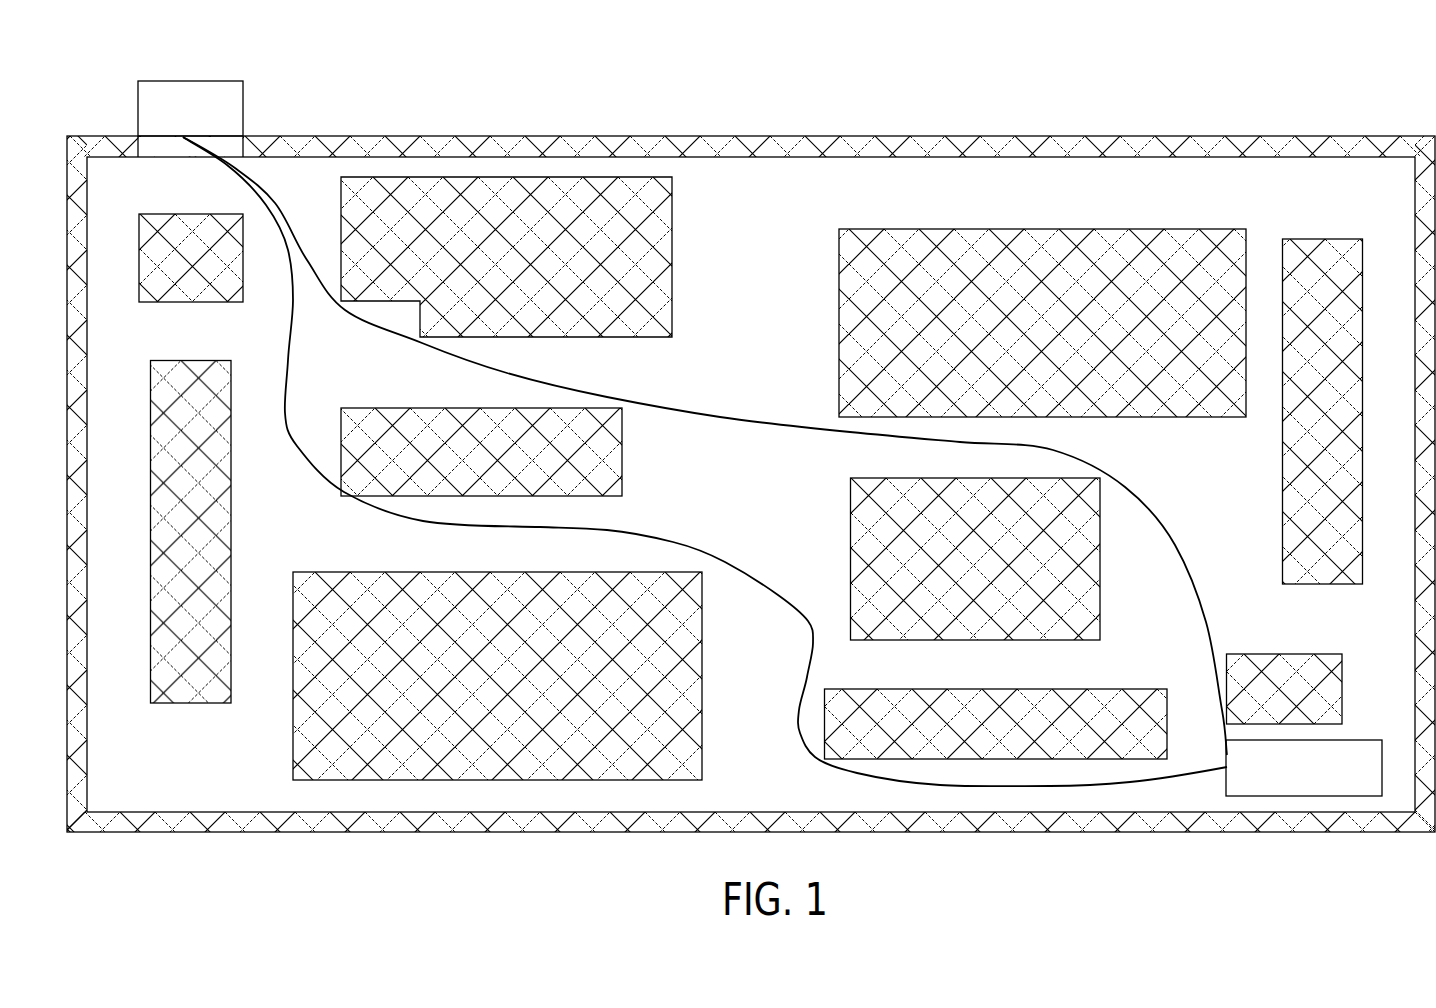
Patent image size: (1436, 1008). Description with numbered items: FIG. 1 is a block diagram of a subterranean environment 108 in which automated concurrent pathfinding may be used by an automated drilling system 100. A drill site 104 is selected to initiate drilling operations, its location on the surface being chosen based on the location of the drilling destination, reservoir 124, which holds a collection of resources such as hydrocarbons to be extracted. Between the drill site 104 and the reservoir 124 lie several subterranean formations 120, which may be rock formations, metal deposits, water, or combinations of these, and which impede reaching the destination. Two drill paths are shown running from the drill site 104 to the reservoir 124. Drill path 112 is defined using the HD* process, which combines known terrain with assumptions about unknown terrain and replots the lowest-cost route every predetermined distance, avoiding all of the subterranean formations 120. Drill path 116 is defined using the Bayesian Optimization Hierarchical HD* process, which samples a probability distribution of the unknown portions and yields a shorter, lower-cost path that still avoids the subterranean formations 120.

The drilling system 100 is at (1340, 124).
The drill site 104 is at (190, 80).
The subterranean environment 108 is at (804, 190).
The drill path 112 is at (650, 540).
The drill path 116 is at (727, 417).
The subterranean formations 120 is at (139, 240).
The reservoir 124 is at (1362, 740).